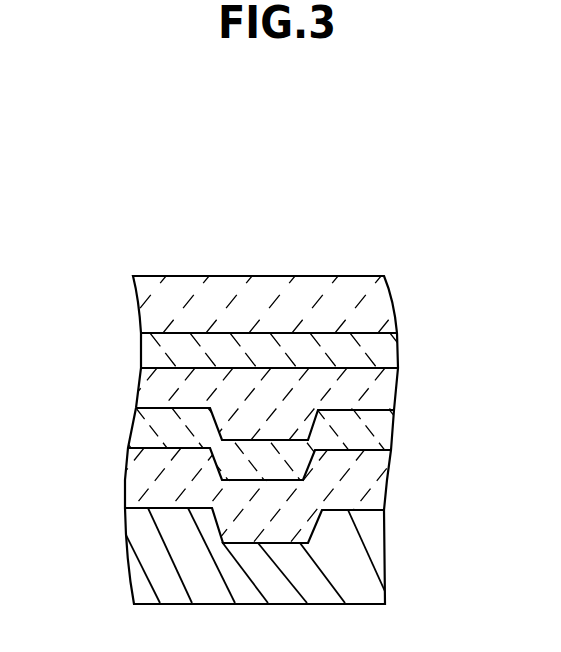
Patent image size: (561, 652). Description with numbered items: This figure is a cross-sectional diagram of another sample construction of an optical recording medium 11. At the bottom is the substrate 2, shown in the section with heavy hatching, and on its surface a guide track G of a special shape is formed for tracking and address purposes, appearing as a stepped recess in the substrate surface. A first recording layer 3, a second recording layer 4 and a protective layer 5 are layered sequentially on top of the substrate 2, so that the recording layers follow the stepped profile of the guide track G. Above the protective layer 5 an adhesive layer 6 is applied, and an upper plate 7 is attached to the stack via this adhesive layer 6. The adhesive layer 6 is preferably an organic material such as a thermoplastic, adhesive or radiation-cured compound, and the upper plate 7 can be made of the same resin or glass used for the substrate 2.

The optical recording medium 11 is at (408, 268).
The upper plate 7 is at (381, 318).
The adhesive layer 6 is at (383, 355).
The protective layer 5 is at (382, 393).
The second recording layer 4 is at (382, 435).
The first recording layer 3 is at (382, 478).
The substrate 2 is at (384, 552).
The guide track G is at (257, 525).